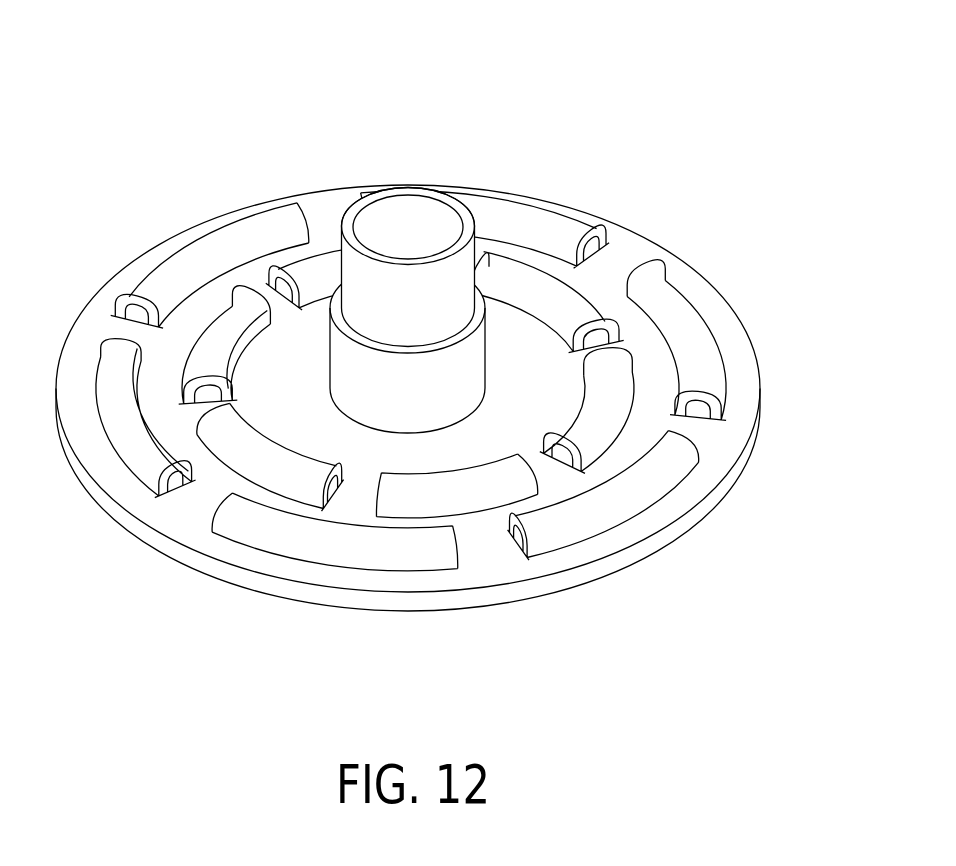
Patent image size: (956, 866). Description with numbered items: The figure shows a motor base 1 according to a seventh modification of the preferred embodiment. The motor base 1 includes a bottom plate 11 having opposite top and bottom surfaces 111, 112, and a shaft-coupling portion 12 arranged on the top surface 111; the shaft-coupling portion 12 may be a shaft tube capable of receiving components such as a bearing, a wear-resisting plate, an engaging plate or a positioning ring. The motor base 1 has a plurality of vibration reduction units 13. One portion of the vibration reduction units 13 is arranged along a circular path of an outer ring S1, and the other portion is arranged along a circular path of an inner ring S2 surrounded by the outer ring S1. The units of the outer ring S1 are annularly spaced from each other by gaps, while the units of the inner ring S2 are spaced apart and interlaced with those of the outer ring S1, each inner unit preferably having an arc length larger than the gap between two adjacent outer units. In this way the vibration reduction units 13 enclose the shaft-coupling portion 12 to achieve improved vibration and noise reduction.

The motor base 1 is at (542, 104).
The bottom plate 11 is at (723, 628).
The top surface 111 is at (625, 532).
The bottom surface 112 is at (597, 578).
The shaft-coupling portion 12 is at (333, 270).
The vibration reduction units 13 is at (243, 240).
The outer ring S1 is at (715, 292).
The inner ring S2 is at (668, 390).